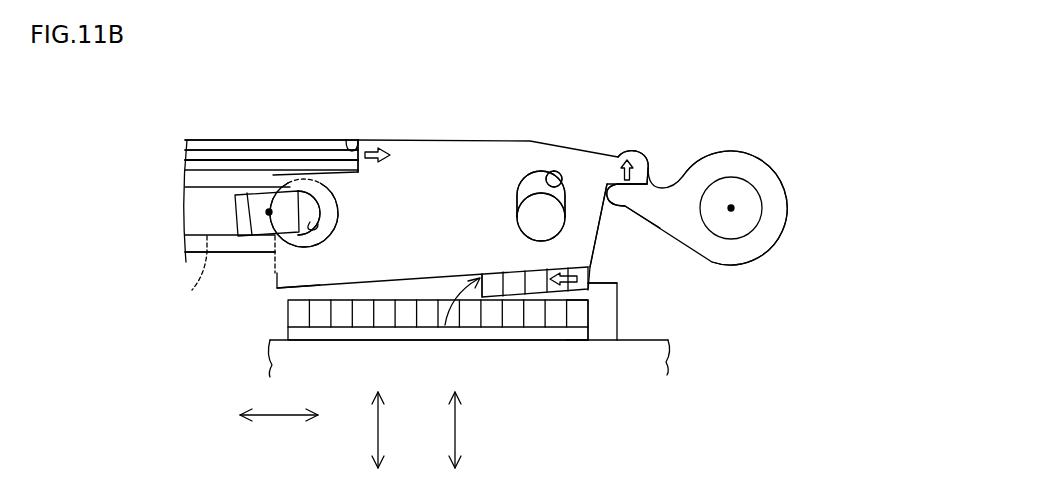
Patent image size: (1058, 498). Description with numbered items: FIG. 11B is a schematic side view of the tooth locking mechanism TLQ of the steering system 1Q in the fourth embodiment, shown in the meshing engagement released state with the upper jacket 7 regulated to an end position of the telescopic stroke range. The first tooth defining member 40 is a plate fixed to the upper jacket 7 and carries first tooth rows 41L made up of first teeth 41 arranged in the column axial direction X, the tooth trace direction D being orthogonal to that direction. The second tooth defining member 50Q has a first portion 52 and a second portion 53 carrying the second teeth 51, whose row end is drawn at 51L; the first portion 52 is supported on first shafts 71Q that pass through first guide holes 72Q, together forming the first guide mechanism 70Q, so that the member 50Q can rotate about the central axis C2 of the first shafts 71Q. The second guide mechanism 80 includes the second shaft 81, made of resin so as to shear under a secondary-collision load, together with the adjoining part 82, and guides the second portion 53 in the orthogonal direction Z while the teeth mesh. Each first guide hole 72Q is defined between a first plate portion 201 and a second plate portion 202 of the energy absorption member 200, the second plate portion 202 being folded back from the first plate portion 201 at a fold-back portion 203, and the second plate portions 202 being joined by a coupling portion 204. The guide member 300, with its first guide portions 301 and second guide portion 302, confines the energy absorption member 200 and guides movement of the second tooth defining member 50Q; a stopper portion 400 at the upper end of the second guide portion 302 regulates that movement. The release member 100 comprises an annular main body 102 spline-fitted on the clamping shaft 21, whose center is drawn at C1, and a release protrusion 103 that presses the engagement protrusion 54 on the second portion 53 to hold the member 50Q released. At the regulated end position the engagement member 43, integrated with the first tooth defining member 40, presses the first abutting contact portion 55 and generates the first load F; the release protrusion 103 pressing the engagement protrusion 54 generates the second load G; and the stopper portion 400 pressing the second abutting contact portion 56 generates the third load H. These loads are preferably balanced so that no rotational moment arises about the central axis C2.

The steering system 1Q is at (697, 105).
The tooth locking mechanism TLQ is at (747, 125).
The release member 100 is at (782, 177).
The annular main body 102 is at (775, 198).
The clamping shaft 21 is at (762, 208).
The rotation axis of cam C1 is at (731, 208).
The energy absorption member 200 is at (182, 178).
The guide member 300 is at (247, 138).
The first guide portions 301 is at (215, 163).
The second guide portion 302 is at (317, 150).
The first plate portions 201 is at (270, 178).
The second abutting contact portion 56 is at (352, 143).
The stopper portion 400 is at (358, 138).
The second tooth defining member 50Q is at (437, 140).
The first portion 52 is at (285, 268).
The second portion 53 is at (597, 238).
The engagement protrusion 54 is at (643, 170).
The first abutting contact portion 55 is at (600, 285).
The second guide mechanism 80 is at (625, 92).
The second shaft 81 is at (532, 202).
The roller shaft 82 is at (563, 187).
The release protrusion 103 is at (630, 200).
The first guide mechanism 70Q is at (410, 222).
The first shafts 71Q is at (320, 247).
The first guide holes 72Q is at (327, 227).
The fold-back portion 203 is at (332, 210).
The coupling portion 204 is at (188, 275).
The second plate portions 202 is at (217, 245).
The central axis of the first shafts C2 is at (272, 210).
The first tooth defining member 40 is at (288, 313).
The first teeth 41 is at (515, 320).
The first tooth rows 41L is at (592, 317).
The engagement member 43 is at (608, 305).
The second teeth 51 is at (557, 285).
The rack end of moving member 51L is at (450, 324).
The upper jacket 7 is at (668, 346).
The third load H is at (370, 163).
The second load G is at (620, 158).
The first load F is at (567, 267).
The column axial direction X is at (280, 443).
The orthogonal direction Z is at (380, 425).
The tooth trace direction D is at (457, 425).